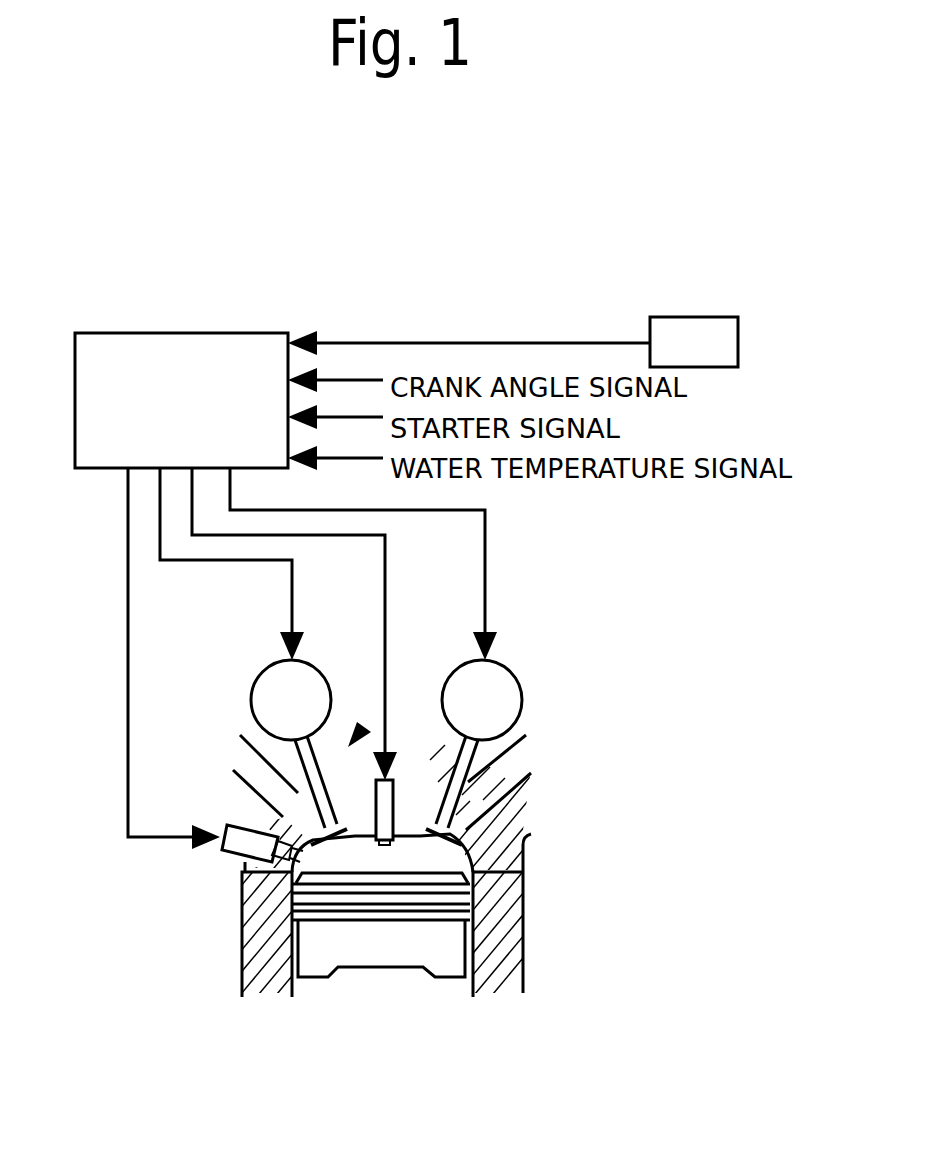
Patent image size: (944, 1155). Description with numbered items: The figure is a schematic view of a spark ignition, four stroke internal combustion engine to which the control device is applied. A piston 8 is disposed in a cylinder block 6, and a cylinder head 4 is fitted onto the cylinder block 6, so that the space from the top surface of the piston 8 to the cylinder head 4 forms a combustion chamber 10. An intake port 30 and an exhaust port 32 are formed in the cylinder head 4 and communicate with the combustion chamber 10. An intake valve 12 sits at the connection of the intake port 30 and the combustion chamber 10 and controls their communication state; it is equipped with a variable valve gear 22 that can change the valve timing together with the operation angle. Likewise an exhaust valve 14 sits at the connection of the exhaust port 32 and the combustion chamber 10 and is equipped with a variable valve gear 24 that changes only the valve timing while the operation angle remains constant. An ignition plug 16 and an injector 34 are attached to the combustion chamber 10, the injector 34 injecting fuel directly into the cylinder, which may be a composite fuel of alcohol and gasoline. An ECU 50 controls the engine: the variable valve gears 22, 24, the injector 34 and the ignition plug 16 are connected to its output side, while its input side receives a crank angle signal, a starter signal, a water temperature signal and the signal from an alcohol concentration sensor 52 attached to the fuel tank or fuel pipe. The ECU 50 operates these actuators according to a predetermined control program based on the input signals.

The cylinder head 4 is at (522, 850).
The cylinder block 6 is at (523, 940).
The piston 8 is at (318, 968).
The combustion chamber 10 is at (423, 863).
The intake valve 12 is at (300, 813).
The exhaust valve 14 is at (455, 815).
The ignition plug 16 is at (408, 800).
The variable valve gear 22 is at (268, 664).
The variable valve gear 24 is at (505, 664).
The intake port 30 is at (267, 780).
The exhaust port 32 is at (487, 788).
The injector 34 is at (230, 852).
The ECU 50 is at (172, 332).
The alcohol concentration sensor 52 is at (698, 317).